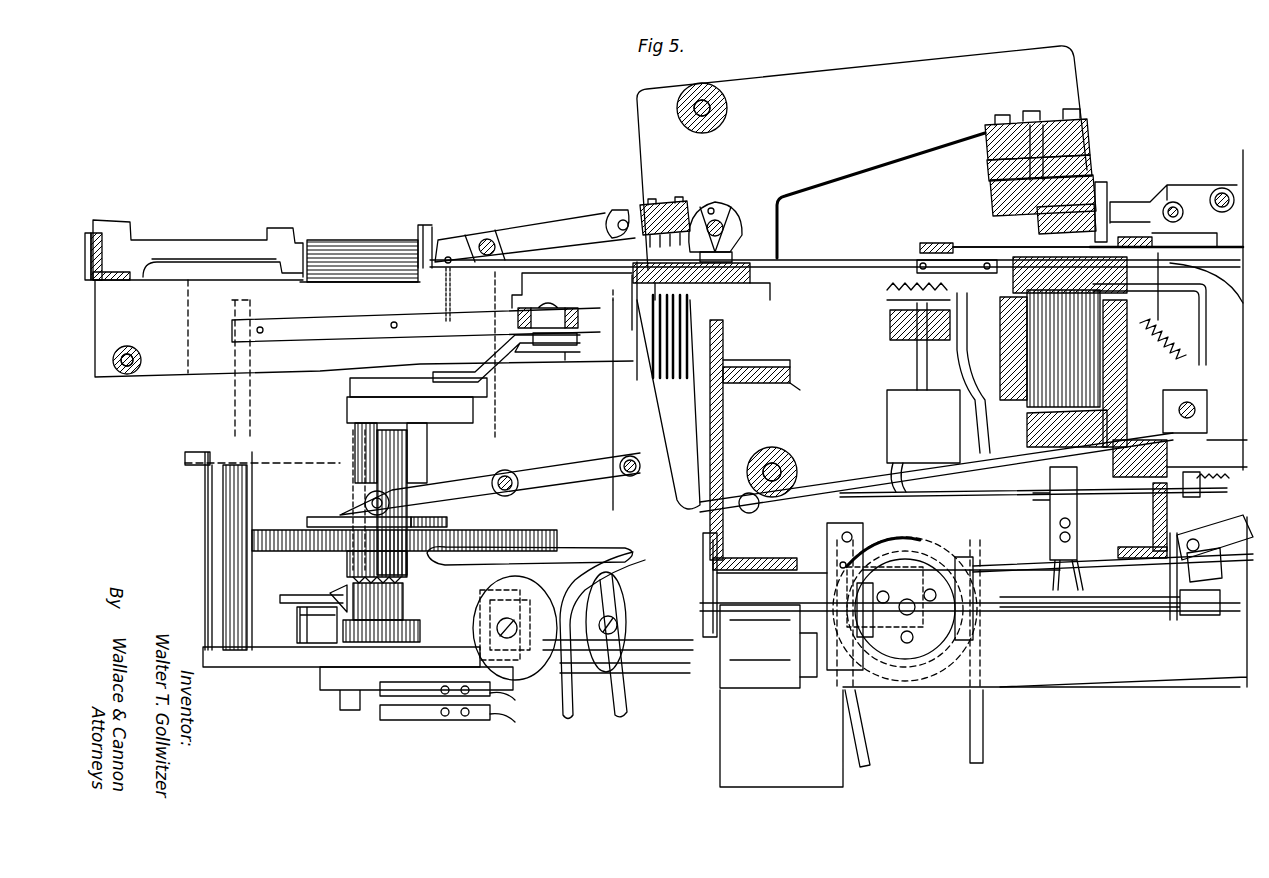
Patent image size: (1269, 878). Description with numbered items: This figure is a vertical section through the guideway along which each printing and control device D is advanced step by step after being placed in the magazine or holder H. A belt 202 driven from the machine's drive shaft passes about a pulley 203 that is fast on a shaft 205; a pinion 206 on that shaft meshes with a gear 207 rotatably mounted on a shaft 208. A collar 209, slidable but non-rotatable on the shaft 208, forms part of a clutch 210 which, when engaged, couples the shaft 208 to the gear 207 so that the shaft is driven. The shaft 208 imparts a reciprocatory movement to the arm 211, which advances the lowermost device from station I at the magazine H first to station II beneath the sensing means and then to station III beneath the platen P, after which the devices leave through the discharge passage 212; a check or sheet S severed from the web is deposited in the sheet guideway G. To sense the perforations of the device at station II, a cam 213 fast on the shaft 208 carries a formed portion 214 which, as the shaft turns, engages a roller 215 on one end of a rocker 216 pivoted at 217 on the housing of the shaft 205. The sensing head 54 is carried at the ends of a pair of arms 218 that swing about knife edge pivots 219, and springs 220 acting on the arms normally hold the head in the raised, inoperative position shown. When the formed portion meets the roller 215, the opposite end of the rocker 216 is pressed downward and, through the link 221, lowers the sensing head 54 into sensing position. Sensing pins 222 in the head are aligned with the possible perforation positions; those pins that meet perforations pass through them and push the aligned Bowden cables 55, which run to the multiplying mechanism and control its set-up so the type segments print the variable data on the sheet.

The printing and control device D is at (373, 240).
The magazine or holder H is at (437, 236).
The station I is at (352, 279).
The station II is at (686, 253).
The station III is at (950, 209).
The sheet guideway G is at (933, 242).
The check or sheet S is at (977, 250).
The platen P is at (1104, 168).
The sensing head 54 is at (664, 204).
The Bowden cables 55 is at (693, 365).
The belt 202 is at (557, 710).
The pulley 203 is at (612, 552).
The shaft 205 is at (578, 545).
The pinion 206 is at (558, 520).
The gear 207 is at (268, 541).
The shaft 208 is at (350, 432).
The collar 209 is at (400, 604).
The clutch 210 is at (335, 584).
The arm 211 is at (520, 366).
The discharge passage 212 is at (1233, 292).
The cam 213 is at (323, 522).
The formed portion 214 is at (347, 510).
The roller 215 is at (400, 480).
The rocker 216 is at (445, 495).
The pivot 217 is at (505, 470).
The arms 218 is at (541, 232).
The knife edge pivots 219 is at (468, 270).
The springs 220 is at (440, 292).
The link 221 is at (622, 400).
The sensing pins 222 is at (607, 218).